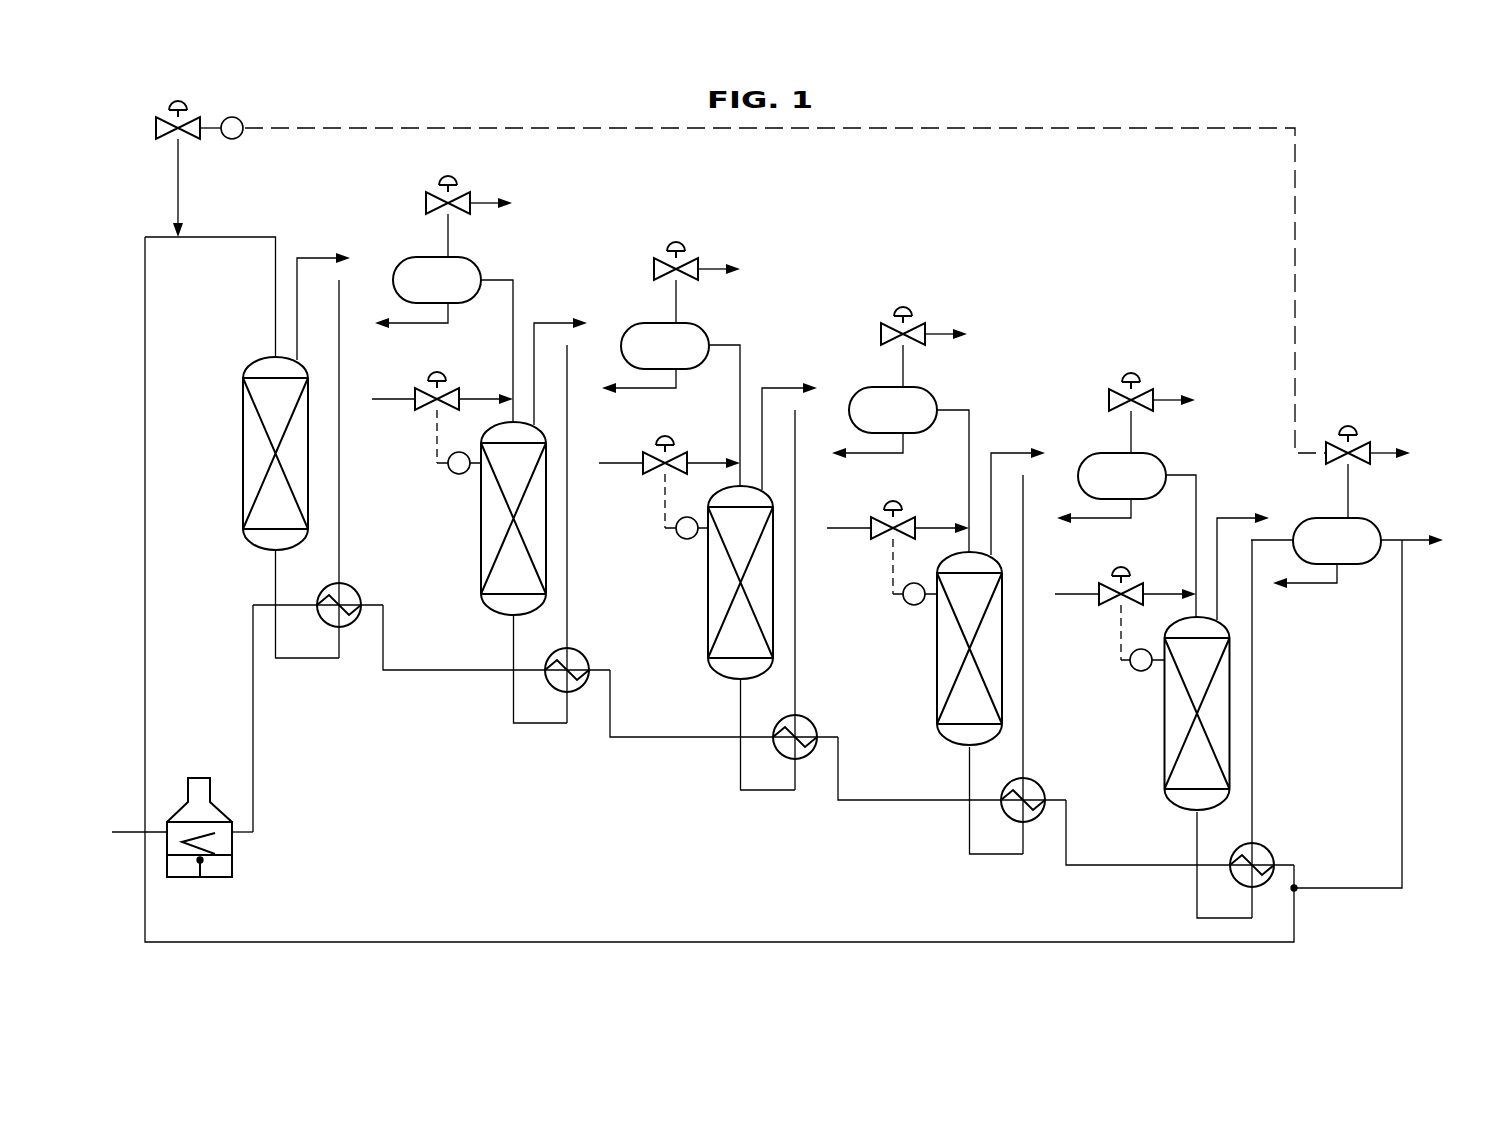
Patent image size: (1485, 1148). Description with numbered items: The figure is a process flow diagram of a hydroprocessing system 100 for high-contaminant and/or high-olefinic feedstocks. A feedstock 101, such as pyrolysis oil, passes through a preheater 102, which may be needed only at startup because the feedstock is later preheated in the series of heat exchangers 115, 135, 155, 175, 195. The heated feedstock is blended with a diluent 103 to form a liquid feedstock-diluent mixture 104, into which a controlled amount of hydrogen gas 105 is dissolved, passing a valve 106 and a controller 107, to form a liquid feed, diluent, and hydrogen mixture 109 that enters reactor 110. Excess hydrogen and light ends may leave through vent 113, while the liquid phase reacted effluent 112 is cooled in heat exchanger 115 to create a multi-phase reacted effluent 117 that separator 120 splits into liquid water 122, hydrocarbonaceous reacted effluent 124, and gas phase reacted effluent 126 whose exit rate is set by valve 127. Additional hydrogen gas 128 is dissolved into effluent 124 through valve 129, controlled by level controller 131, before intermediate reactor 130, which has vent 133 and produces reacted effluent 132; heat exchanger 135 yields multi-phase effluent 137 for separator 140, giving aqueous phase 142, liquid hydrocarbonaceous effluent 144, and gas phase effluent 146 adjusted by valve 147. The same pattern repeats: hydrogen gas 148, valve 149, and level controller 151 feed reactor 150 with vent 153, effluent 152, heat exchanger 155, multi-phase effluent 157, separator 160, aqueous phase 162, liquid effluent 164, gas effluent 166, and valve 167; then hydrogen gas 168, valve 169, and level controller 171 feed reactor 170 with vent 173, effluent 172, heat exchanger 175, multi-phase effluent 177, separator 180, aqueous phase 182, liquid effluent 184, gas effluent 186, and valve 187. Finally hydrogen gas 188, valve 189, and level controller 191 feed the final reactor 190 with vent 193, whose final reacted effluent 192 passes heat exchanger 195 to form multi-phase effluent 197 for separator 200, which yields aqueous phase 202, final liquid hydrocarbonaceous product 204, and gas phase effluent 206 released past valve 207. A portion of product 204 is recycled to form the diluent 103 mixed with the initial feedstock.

The hydroprocessing system 100 is at (1030, 112).
The high-contaminant and/or high-olefinic feedstock 101 is at (128, 838).
The preheater 102 is at (188, 878).
The diluent 103 is at (1403, 710).
The liquid feedstock-diluent mixture 104 is at (1295, 908).
The hydrogen gas 105 is at (177, 183).
The hydrogen control valve 106 is at (165, 113).
The flow controller 107 is at (227, 115).
The liquid phase feed, diluent, and hydrogen mixture 109 is at (210, 239).
The reactor 110 is at (242, 453).
The liquid phase reacted effluent 112 is at (272, 582).
The vent 113 is at (320, 255).
The heat exchanger 115 is at (347, 588).
The multi-phase reacted effluent 117 is at (340, 523).
The separator 120 is at (400, 260).
The liquid water 122 is at (402, 325).
The hydrocarbonaceous reacted effluent 124 is at (512, 361).
The gas phase reacted effluent 126 is at (450, 248).
The valve 127 is at (437, 188).
The additional hydrogen gas 128 is at (380, 401).
The valve 129 is at (430, 410).
The intermediate reactor 130 is at (478, 562).
The level controller 131 is at (456, 478).
The liquid phase reacted effluent 132 is at (512, 690).
The vent 133 is at (557, 322).
The heat exchanger 135 is at (577, 653).
The multi-phase reacted effluent 137 is at (570, 587).
The separator 140 is at (632, 323).
The liquid water or aqueous phase 142 is at (633, 392).
The liquid hydrocarbonaceous reacted effluent 144 is at (738, 427).
The gas phase reacted effluent 146 is at (678, 313).
The valve 147 is at (662, 252).
The additional hydrogen gas 148 is at (607, 468).
The valve 149 is at (658, 476).
The intermediate reactor 150 is at (707, 625).
The level controller 151 is at (684, 542).
The liquid phase reacted effluent 152 is at (738, 752).
The vent 153 is at (787, 385).
The heat exchanger 155 is at (805, 713).
The multi-phase reacted effluent 157 is at (797, 655).
The separator 160 is at (853, 392).
The liquid water or aqueous phase 162 is at (862, 457).
The liquid hydrocarbonaceous reacted effluent 164 is at (968, 490).
The gas phase reacted effluent 166 is at (906, 378).
The valve 167 is at (892, 318).
The additional hydrogen gas 168 is at (833, 535).
The valve 169 is at (882, 540).
The intermediate reactor 170 is at (935, 693).
The level controller 171 is at (912, 608).
The liquid phase reacted effluent 172 is at (967, 823).
The vent 173 is at (1013, 452).
The heat exchanger 175 is at (1033, 778).
The multi-phase reacted effluent 177 is at (1024, 718).
The separator 180 is at (1087, 457).
The liquid water or aqueous phase 182 is at (1087, 525).
The liquid hydrocarbonaceous reacted effluent 184 is at (1195, 555).
The gas phase reacted effluent 186 is at (1132, 442).
The valve 187 is at (1120, 385).
The additional hydrogen gas 188 is at (1058, 598).
The valve 189 is at (1110, 605).
The final reactor 190 is at (1162, 757).
The level controller 191 is at (1138, 672).
The final liquid phase reacted effluent 192 is at (1195, 887).
The vent 193 is at (1240, 517).
The heat exchanger 195 is at (1258, 845).
The multi-phase reacted effluent 197 is at (1255, 708).
The separator 200 is at (1300, 518).
The liquid water or aqueous phase 202 is at (1298, 587).
The final liquid hydrocarbonaceous product 204 is at (1392, 545).
The gas phase reacted effluent 206 is at (1350, 507).
The fifth overhead valve 207 is at (1363, 445).